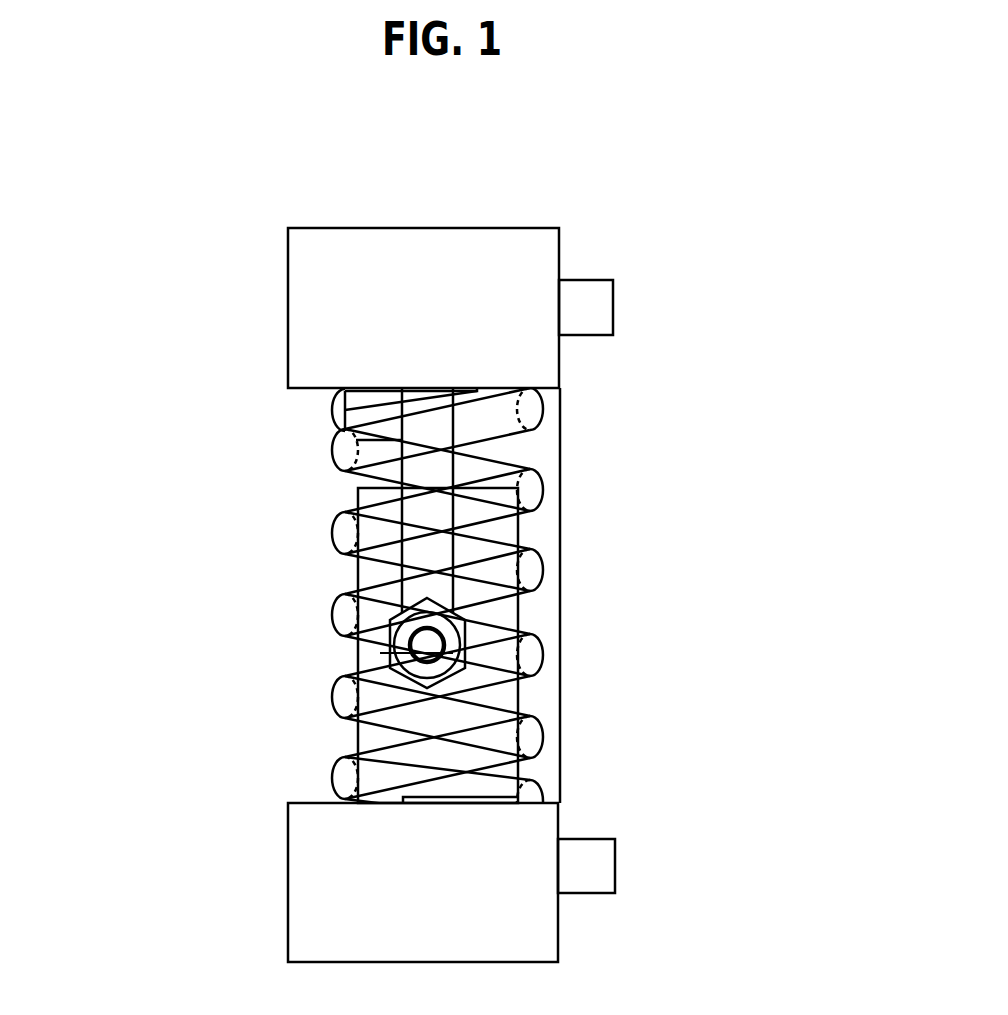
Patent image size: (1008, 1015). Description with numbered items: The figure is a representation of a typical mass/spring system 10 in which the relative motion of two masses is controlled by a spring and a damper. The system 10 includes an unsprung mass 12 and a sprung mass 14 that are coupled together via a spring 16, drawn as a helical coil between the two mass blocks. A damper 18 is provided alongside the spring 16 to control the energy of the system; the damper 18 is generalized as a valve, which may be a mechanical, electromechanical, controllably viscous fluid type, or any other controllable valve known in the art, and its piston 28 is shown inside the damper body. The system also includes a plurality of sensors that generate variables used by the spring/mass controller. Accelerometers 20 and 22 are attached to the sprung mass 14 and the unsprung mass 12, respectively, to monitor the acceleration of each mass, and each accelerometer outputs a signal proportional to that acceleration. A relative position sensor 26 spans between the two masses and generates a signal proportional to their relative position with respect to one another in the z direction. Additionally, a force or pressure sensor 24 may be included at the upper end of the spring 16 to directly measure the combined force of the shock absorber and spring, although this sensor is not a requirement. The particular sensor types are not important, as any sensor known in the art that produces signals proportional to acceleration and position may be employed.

The mass/spring system 10 is at (477, 163).
The unsprung mass 12 is at (302, 800).
The sprung mass 14 is at (320, 227).
The spring 16 is at (50, 534).
The damper 18 is at (800, 532).
The accelerometer 20 is at (895, 310).
The accelerometer 22 is at (897, 863).
The force or pressure sensor 24 is at (343, 417).
The relative position sensor 26 is at (842, 443).
The piston 28 is at (380, 653).